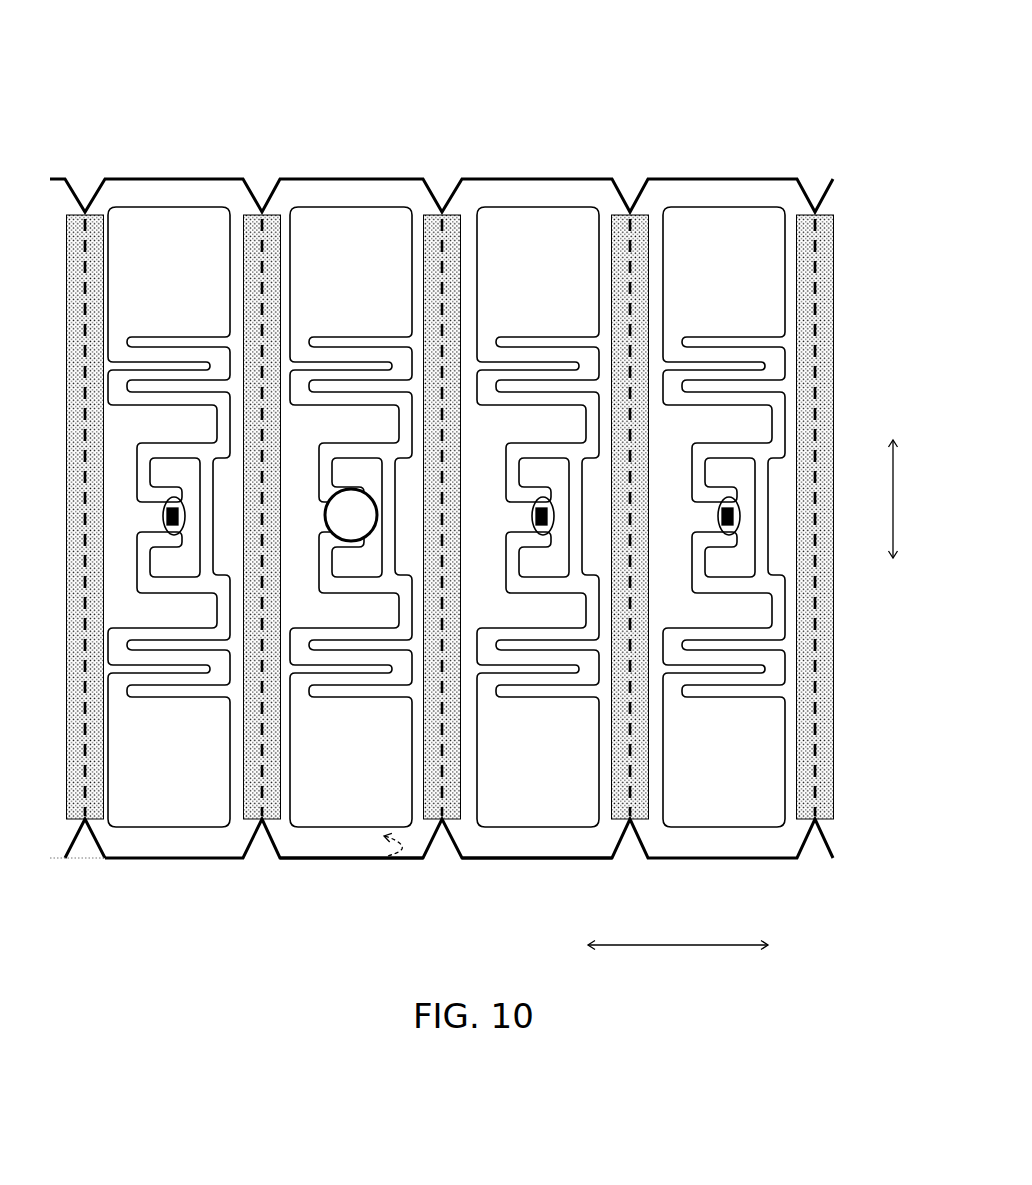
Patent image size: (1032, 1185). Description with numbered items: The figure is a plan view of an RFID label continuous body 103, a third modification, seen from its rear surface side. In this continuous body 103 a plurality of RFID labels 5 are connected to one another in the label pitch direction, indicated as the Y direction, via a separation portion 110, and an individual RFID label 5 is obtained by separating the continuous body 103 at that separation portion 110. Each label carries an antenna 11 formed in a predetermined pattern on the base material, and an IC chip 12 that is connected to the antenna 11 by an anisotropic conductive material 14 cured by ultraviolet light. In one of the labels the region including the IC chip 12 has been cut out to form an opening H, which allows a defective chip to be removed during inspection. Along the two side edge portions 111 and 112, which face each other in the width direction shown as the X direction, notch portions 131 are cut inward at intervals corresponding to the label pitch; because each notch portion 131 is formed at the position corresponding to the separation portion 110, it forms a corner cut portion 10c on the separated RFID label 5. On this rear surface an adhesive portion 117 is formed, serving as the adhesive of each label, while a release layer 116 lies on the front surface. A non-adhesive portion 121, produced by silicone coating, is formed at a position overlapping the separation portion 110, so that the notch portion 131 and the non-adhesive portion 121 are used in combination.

The RFID label continuous body 103 is at (408, 105).
The corner cut portion 10c is at (87, 210).
The notch portion 131 is at (262, 188).
The separation portion 110 is at (446, 743).
The non-adhesive portion 121 is at (458, 219).
The side edge portion 111 is at (748, 177).
The antenna 11 is at (178, 223).
The IC chip 12 is at (166, 518).
The anisotropic conductive material 14 is at (168, 498).
The RFID label 5 is at (137, 168).
The opening H is at (329, 497).
The adhesive portion 117 is at (344, 840).
The release layer 116 is at (385, 856).
The side edge portion 112 is at (485, 860).
The X direction X is at (877, 499).
The Y direction Y is at (678, 963).